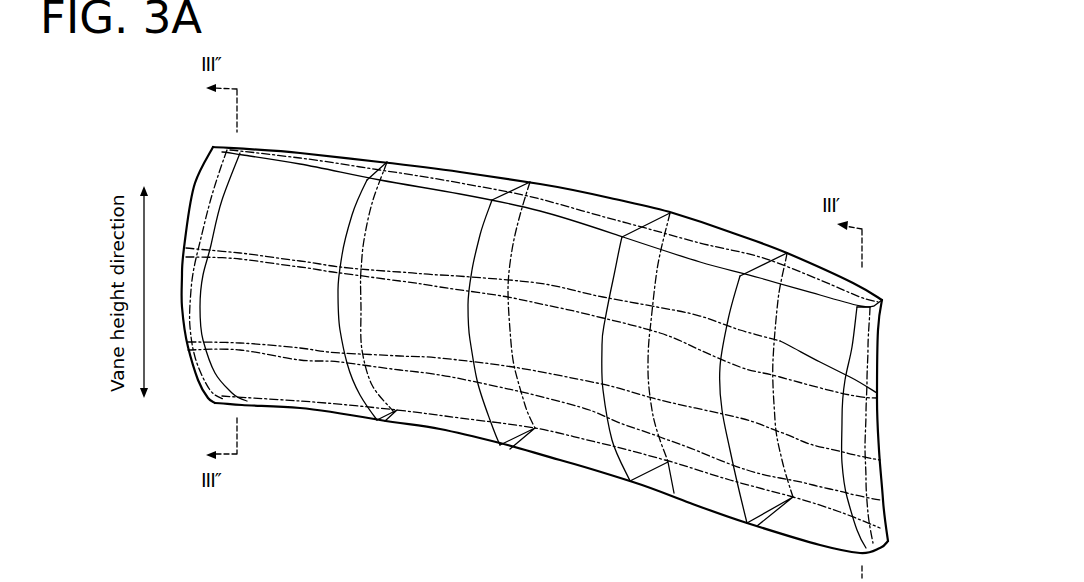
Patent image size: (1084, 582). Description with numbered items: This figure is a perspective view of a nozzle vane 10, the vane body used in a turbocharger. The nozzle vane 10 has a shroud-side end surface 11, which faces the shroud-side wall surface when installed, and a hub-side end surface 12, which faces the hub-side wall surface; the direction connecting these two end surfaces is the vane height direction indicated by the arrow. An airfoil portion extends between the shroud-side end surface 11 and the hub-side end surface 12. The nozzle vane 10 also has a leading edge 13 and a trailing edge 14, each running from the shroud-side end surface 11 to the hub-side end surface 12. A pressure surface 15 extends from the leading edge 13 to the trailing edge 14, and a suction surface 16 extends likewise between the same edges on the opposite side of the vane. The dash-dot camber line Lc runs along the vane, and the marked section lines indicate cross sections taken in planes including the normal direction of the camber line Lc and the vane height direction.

The nozzle vane 10 is at (770, 172).
The shroud-side end surface 11 is at (598, 200).
The hub-side end surface 12 is at (577, 453).
The leading edge 13 is at (893, 297).
The trailing edge 14 is at (203, 143).
The pressure surface 15 is at (823, 420).
The suction surface 16 is at (852, 407).
The camber line Lc is at (467, 180).